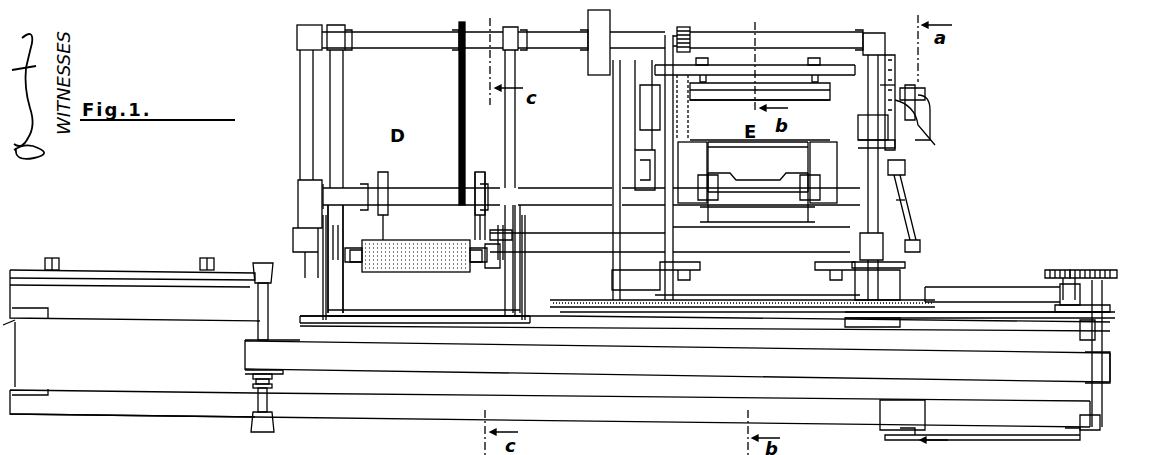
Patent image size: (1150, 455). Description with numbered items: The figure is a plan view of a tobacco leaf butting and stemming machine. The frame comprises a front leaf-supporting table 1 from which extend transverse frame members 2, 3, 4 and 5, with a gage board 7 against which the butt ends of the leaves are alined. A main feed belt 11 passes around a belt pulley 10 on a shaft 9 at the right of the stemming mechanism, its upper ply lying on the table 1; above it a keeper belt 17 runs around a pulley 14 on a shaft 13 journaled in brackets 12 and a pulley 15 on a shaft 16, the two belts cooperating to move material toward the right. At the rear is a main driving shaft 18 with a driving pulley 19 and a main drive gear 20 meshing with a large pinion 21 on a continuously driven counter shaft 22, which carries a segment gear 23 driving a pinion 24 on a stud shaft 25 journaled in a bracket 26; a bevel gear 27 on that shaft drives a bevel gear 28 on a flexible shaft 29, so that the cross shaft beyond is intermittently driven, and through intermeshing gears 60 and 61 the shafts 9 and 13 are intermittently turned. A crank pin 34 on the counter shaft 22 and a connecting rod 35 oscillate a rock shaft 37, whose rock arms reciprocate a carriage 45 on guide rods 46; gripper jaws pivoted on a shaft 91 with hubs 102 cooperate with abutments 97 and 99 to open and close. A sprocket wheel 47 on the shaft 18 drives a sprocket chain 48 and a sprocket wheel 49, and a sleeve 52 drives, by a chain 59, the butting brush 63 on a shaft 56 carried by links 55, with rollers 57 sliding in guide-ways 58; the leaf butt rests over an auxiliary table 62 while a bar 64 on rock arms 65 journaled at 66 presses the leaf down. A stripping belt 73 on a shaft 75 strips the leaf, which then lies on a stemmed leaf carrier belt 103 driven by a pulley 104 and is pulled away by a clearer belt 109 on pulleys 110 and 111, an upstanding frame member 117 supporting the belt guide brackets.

The front leaf-supporting table 1 is at (183, 411).
The transverse frame member 2 is at (300, 139).
The transverse frame member 3 is at (613, 123).
The transverse frame member 4 is at (665, 168).
The transverse frame member 5 is at (845, 156).
The gage board 7 is at (125, 274).
The shaft 9 is at (1062, 305).
The belt pulley 10 is at (1085, 340).
The main feed belt 11 is at (546, 348).
The brackets 12 is at (1080, 432).
The shaft 13 is at (1102, 398).
The pulley 14 is at (1110, 358).
The pulley 15 is at (245, 342).
The shaft 16 is at (258, 306).
The keeper belt 17 is at (677, 361).
The main driving shaft 18 is at (645, 38).
The driving pulley 19 is at (588, 72).
The main drive gear 20 is at (690, 30).
The large pinion 21 is at (694, 107).
The counter shaft 22 is at (732, 104).
The segment gear 23 is at (880, 66).
The pinion 24 is at (895, 82).
The stud shaft 25 is at (912, 88).
The bracket 26 is at (876, 131).
The bevel gear 27 is at (932, 97).
The bevel gear 28 is at (918, 125).
The flexible shaft 29 is at (905, 197).
The crank pin 34 is at (635, 97).
The connecting rod 35 is at (635, 152).
The rock shaft 37 is at (292, 196).
The reciprocatory carriage 45 is at (759, 182).
The guide rods 46 is at (692, 172).
The sprocket wheel 47 is at (458, 24).
The sprocket chain 48 is at (459, 112).
The sprocket wheel 49 is at (474, 206).
The sleeve 52 is at (418, 193).
The links 55 is at (378, 210).
The shaft 56 is at (500, 272).
The rollers 57 is at (320, 253).
The guide-ways 58 is at (540, 234).
The chain 59 is at (480, 278).
The gear 60 is at (1053, 274).
The gear 61 is at (1093, 270).
The auxiliary table 62 is at (416, 280).
The butting brush 63 is at (436, 272).
The bar 64 is at (369, 335).
The rock arms 65 is at (323, 302).
The journal 66 is at (318, 272).
The stripping belt 73 is at (757, 300).
The shaft 75 is at (639, 449).
The shaft 91 is at (779, 176).
The adjustable fixed abutments 97 is at (808, 78).
The adjustable fixed abutments 99 is at (815, 268).
The hubs 102 is at (905, 168).
The stemmed leaf carrier belt 103 is at (758, 316).
The pulley 104 is at (705, 329).
The stemmed leaf clearer belt 109 is at (980, 331).
The pulley 110 is at (872, 320).
The pulley 111 is at (1100, 307).
The upstanding frame member 117 is at (645, 290).